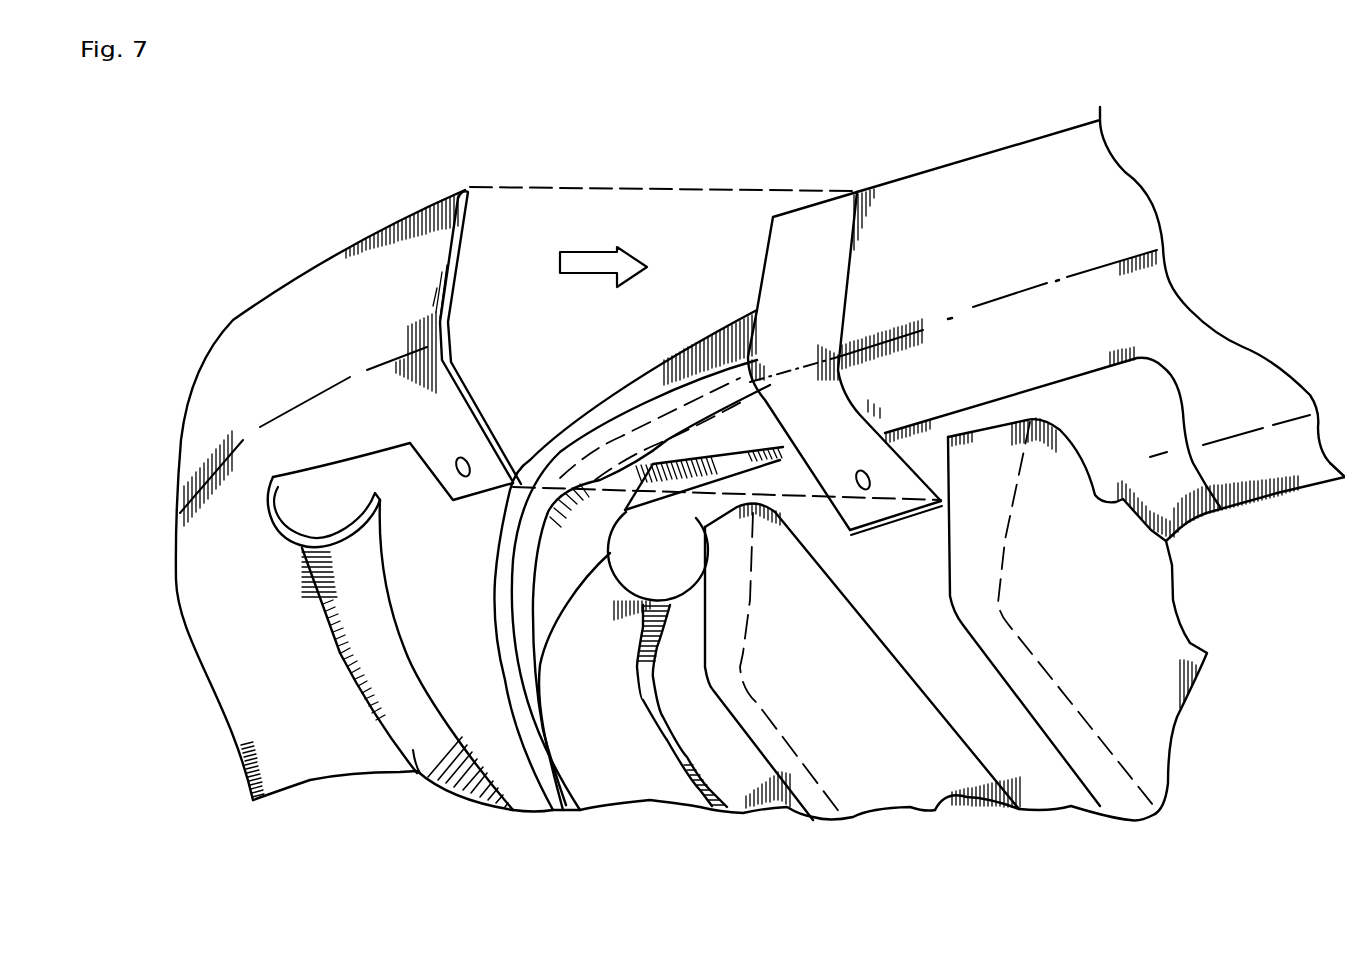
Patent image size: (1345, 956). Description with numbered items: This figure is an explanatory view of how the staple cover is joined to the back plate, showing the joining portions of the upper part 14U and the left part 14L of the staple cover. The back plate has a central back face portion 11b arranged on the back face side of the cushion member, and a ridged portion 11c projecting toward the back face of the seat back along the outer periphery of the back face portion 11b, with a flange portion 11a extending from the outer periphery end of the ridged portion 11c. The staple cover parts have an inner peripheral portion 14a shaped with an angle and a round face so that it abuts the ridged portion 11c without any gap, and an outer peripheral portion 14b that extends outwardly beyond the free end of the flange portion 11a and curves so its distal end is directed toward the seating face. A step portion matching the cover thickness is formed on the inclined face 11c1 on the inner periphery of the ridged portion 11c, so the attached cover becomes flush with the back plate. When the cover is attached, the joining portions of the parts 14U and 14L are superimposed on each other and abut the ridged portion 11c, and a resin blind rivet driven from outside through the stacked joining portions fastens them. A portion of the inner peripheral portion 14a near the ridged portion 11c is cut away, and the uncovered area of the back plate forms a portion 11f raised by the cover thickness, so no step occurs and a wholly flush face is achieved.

The left part 14L is at (360, 237).
The upper part 14U is at (920, 168).
The outer peripheral portion 14b is at (222, 373).
The inner peripheral portion 14a is at (420, 773).
The flange portion 11a is at (527, 690).
The back face portion 11b is at (1064, 799).
The ridged portion 11c is at (620, 783).
The inclined face 11c1 is at (710, 803).
The ridged portion (uncovered portion) 11f is at (633, 537).